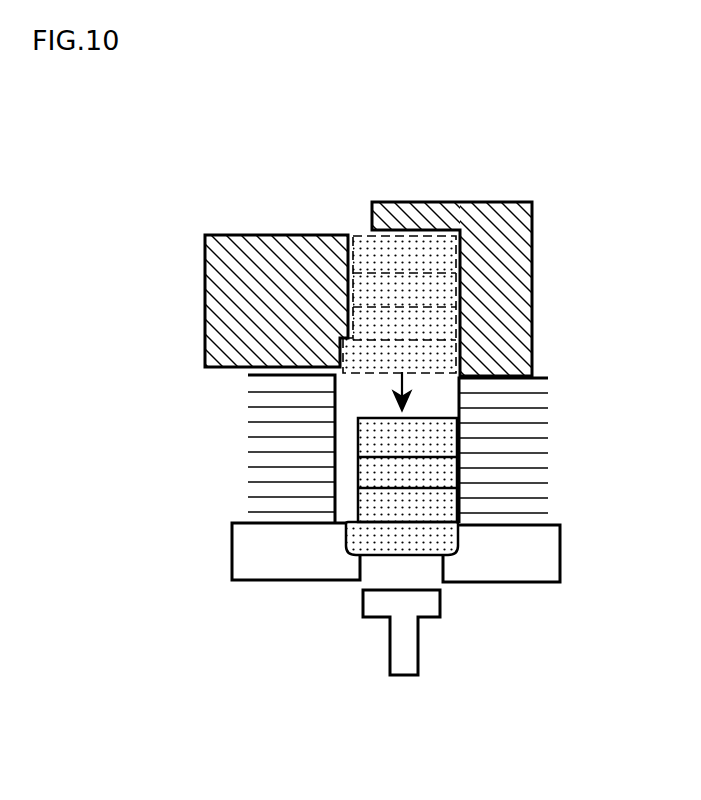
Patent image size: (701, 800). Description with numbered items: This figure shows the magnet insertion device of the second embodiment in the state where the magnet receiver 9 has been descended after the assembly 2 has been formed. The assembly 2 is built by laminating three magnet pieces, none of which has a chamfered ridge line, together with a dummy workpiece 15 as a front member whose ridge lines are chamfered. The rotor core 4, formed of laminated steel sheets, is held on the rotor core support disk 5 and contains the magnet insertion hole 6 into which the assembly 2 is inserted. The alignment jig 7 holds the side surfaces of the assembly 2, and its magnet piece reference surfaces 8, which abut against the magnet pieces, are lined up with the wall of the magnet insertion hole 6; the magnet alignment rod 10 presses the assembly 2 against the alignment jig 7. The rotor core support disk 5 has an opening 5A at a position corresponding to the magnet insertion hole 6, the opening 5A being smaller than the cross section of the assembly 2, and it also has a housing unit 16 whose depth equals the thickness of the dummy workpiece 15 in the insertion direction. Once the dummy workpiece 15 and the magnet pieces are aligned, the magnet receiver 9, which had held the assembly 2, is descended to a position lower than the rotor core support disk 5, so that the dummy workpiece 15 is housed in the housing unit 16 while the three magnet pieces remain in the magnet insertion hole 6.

The assembly 2 is at (342, 549).
The rotor core 4 is at (497, 415).
The rotor core support disk 5 is at (546, 542).
The opening 5A is at (398, 565).
The magnet insertion hole 6 is at (353, 392).
The alignment jig 7 is at (490, 223).
The magnet piece reference surfaces 8 is at (459, 322).
The magnet receiver 9 is at (412, 640).
The magnet alignment rod 10 is at (227, 287).
The dummy workpiece 15 is at (437, 543).
The housing unit 16 is at (457, 540).